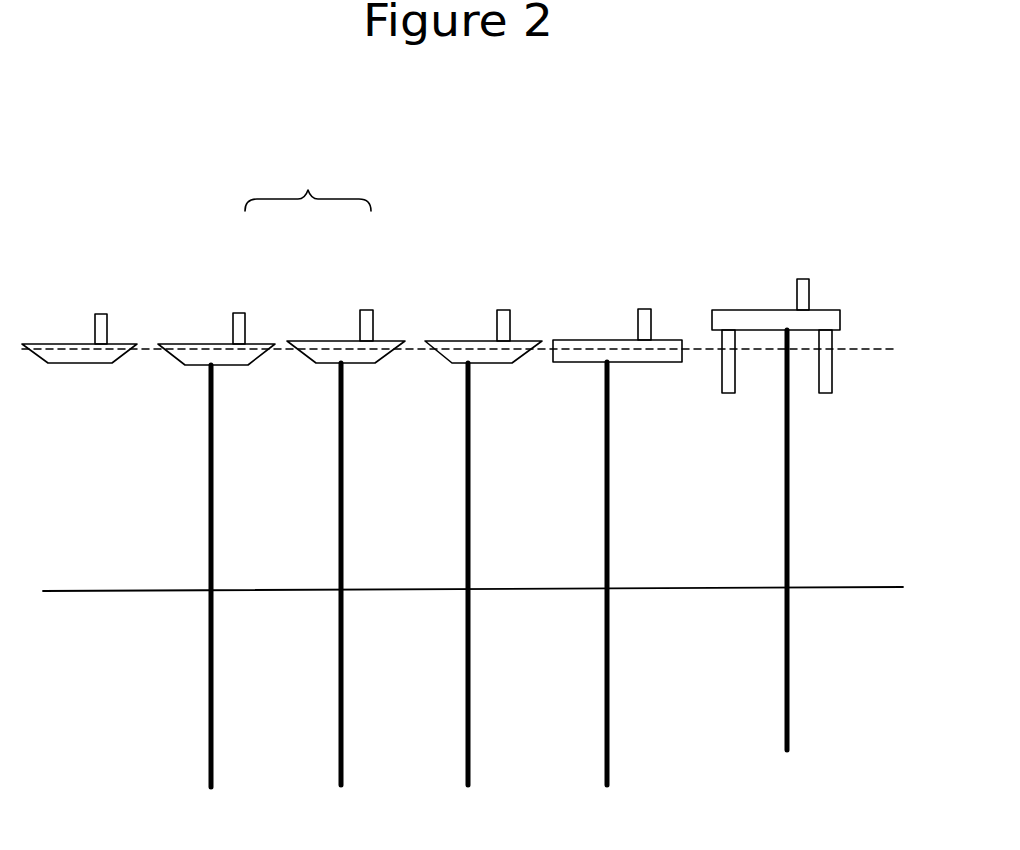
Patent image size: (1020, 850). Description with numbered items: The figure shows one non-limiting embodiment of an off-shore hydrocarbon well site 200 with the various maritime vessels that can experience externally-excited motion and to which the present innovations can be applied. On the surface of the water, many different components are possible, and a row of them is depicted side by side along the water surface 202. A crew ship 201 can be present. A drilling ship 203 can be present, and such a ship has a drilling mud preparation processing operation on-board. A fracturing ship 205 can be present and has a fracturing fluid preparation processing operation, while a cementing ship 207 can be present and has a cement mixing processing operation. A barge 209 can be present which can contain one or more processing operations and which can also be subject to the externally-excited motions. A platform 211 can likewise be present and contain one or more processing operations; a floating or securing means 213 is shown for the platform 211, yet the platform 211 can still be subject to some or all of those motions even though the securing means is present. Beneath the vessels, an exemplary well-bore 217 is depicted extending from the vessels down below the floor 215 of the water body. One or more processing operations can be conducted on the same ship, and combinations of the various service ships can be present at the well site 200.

The off-shore hydrocarbon well site 200 is at (305, 180).
The crew ship 201 is at (79, 311).
The Water Surface 202 is at (462, 276).
The drilling ship 203 is at (216, 312).
The fracturing ship 205 is at (346, 311).
The cementing ship 207 is at (479, 311).
The barge 209 is at (617, 309).
The platform 211 is at (776, 287).
The floating or securing means 213 is at (747, 424).
The floor of the water body 215 is at (473, 625).
The well-bore 217 is at (203, 673).